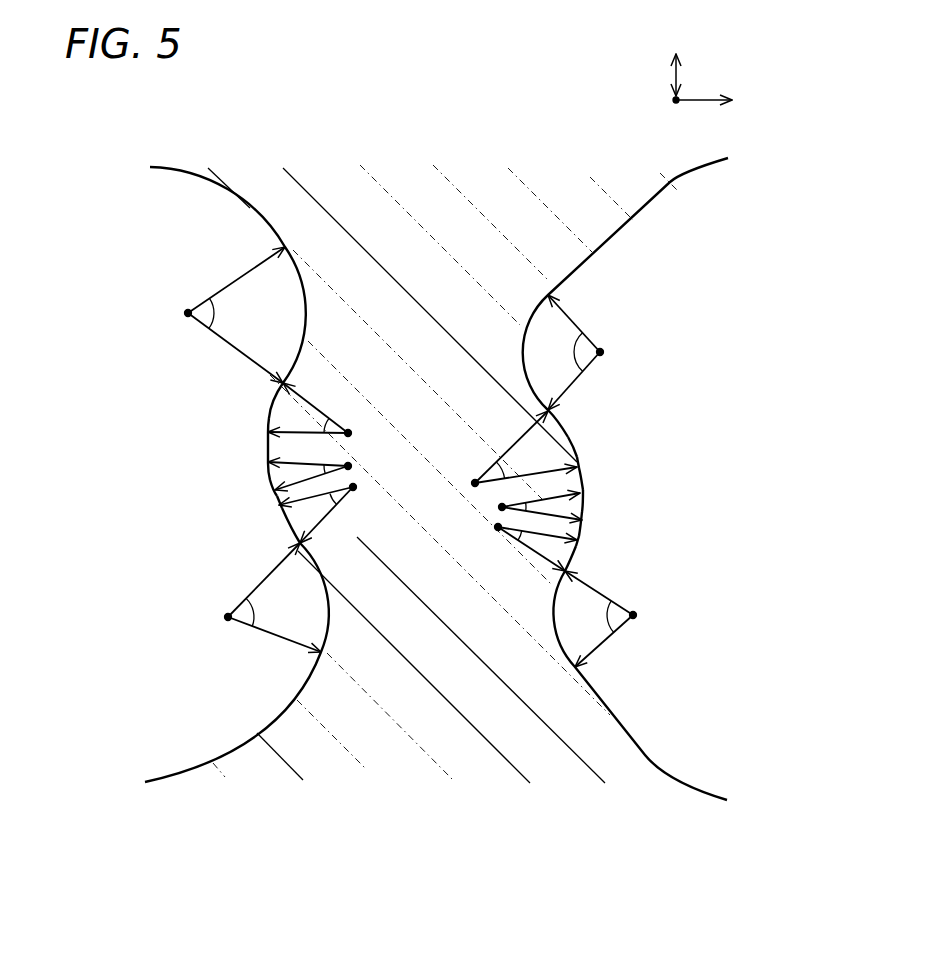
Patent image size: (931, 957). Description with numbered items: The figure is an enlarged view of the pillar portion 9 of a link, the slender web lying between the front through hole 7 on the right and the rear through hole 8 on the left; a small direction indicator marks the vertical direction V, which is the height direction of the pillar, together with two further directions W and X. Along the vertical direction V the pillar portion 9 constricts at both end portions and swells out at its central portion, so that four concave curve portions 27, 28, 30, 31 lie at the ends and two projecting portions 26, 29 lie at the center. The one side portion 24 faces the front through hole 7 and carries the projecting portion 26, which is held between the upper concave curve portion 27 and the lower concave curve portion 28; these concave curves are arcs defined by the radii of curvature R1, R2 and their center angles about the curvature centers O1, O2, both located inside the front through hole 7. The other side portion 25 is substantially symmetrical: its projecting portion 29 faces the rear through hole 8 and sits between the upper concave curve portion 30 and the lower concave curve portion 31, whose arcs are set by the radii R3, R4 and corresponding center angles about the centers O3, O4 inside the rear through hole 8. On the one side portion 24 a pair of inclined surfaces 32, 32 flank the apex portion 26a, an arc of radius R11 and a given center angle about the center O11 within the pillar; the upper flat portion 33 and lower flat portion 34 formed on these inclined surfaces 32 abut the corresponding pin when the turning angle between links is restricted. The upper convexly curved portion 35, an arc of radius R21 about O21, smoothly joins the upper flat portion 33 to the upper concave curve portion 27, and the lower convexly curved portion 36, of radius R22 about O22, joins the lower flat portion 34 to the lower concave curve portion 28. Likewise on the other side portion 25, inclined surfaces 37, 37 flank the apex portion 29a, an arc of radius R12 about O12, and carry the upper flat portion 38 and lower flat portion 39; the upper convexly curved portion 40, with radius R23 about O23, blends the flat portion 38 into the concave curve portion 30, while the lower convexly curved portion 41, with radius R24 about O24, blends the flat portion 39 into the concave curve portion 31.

The front through hole 7 is at (695, 301).
The rear through hole 8 is at (153, 256).
The pillar portion 9 is at (246, 158).
The one side portion 24 is at (610, 240).
The other side portion 25 is at (257, 212).
The projecting portion 26 is at (570, 443).
The apex portion 26a is at (584, 497).
The upper concave curve portion 27 is at (523, 357).
The lower concave curve portion 28 is at (554, 620).
The projecting portion 29 is at (268, 413).
The apex portion 29a is at (268, 470).
The upper concave curve portion 30 is at (305, 311).
The lower concave curve portion 31 is at (326, 607).
The inclined surfaces 32 is at (578, 462).
The upper flat portion 33 is at (582, 480).
The lower flat portion 34 is at (582, 520).
The upper convexly curved portion 35 is at (560, 425).
The lower convexly curved portion 36 is at (570, 562).
The inclined surfaces 37 is at (268, 437).
The upper flat portion 38 is at (268, 452).
The lower flat portion 39 is at (274, 492).
The upper convexly curved portion 40 is at (276, 398).
The lower convexly curved portion 41 is at (290, 528).
The radius of curvature R1 is at (577, 323).
The radius of curvature R2 is at (603, 642).
The radius of curvature R3 is at (233, 347).
The radius of curvature R4 is at (265, 632).
The radius of curvature R11 is at (548, 499).
The radius of curvature R12 is at (320, 464).
The radius of curvature R21 is at (530, 428).
The radius of curvature R22 is at (535, 537).
The radius of curvature R23 is at (308, 395).
The radius of curvature R24 is at (318, 525).
The curvature center O1 is at (603, 352).
The curvature center O2 is at (636, 615).
The curvature center O3 is at (186, 313).
The curvature center O4 is at (226, 617).
The curvature center O11 is at (500, 508).
The curvature center O12 is at (350, 466).
The curvature center O21 is at (476, 480).
The curvature center O22 is at (497, 530).
The curvature center O23 is at (350, 430).
The curvature center O24 is at (355, 490).
The vertical direction V is at (680, 73).
The width direction W is at (676, 104).
The axial direction X is at (702, 101).